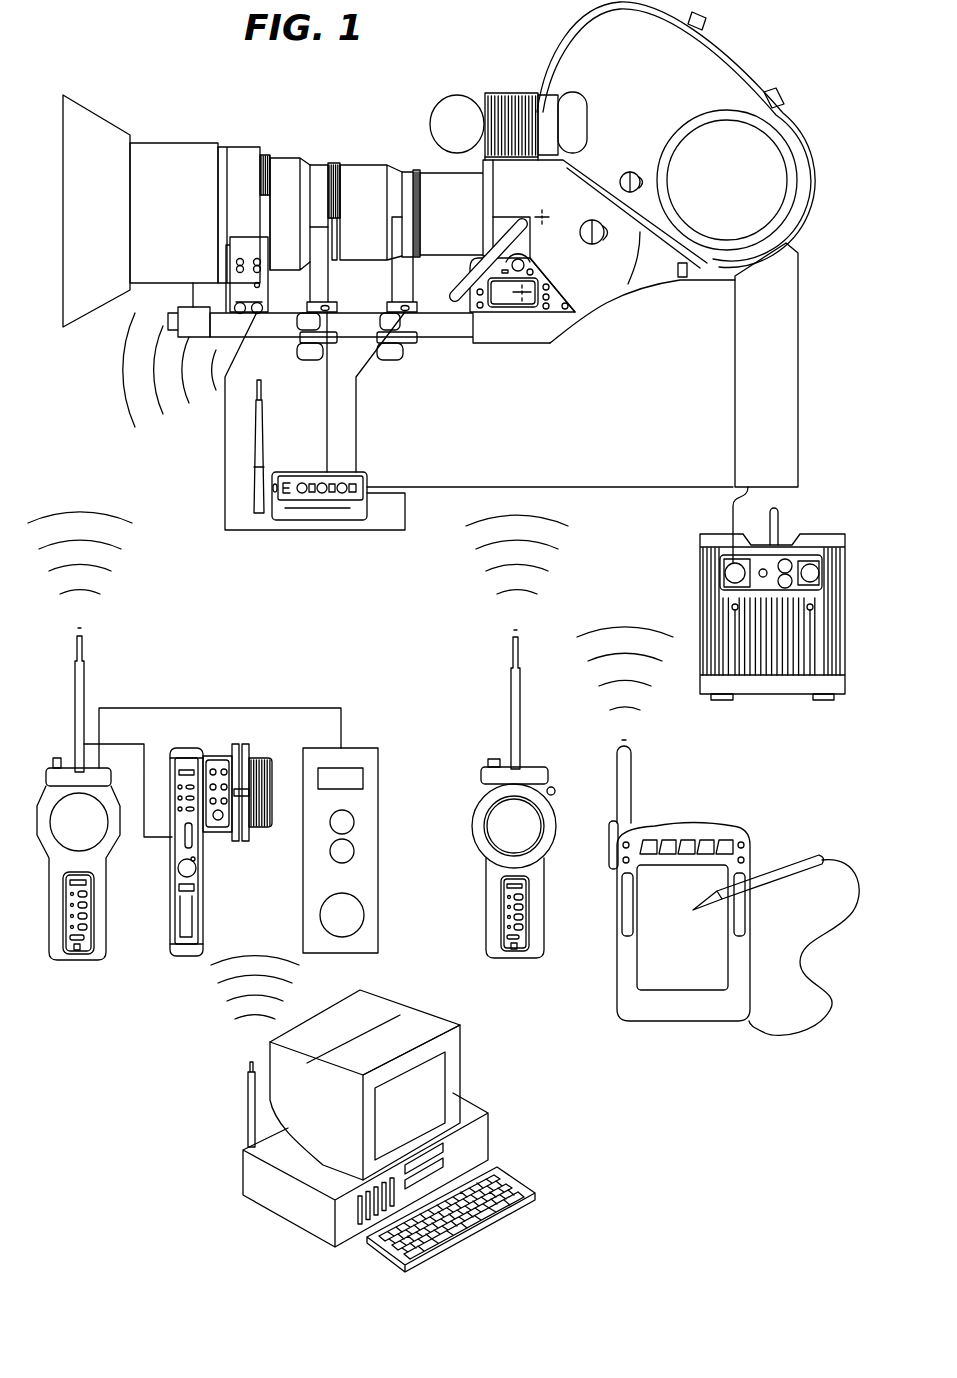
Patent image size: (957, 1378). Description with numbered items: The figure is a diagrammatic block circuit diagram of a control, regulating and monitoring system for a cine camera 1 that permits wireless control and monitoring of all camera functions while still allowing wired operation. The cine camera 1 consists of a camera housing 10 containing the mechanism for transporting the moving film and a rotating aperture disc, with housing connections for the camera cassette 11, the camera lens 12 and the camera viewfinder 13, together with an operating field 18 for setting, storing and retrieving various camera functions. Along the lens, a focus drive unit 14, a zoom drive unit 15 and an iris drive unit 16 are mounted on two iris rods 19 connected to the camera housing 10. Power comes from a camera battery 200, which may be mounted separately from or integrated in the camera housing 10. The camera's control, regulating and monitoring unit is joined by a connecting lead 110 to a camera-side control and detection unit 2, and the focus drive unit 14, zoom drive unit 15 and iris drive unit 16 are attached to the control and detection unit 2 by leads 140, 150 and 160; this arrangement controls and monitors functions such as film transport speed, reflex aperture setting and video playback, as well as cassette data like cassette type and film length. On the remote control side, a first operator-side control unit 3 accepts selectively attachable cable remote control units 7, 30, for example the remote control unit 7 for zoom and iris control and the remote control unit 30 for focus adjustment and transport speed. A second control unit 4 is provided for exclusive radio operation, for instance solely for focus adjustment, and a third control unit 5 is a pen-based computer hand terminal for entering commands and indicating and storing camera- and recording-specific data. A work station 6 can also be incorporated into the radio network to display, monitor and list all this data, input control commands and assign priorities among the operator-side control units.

The cine camera 1 is at (128, 66).
The control and detection unit 2 is at (300, 520).
The first operator-side control unit 3 is at (87, 960).
The second control unit 4 is at (520, 960).
The third control unit 5 is at (700, 1021).
The work station 6 is at (460, 1072).
The remote control unit 7 is at (185, 956).
The camera housing 10 is at (590, 280).
The camera cassette 11 is at (700, 63).
The camera lens 12 is at (155, 147).
The camera viewfinder 13 is at (447, 106).
The focus drive unit 14 is at (250, 243).
The zoom drive unit 15 is at (317, 222).
The iris drive unit 16 is at (400, 253).
The operating field 18 is at (553, 303).
The iris rods 19 is at (445, 338).
The remote control unit 30 is at (378, 927).
The connecting lead 110 is at (735, 378).
The lead 140 is at (225, 457).
The lead 150 is at (327, 423).
The lead 160 is at (355, 455).
The camera battery 200 is at (754, 700).